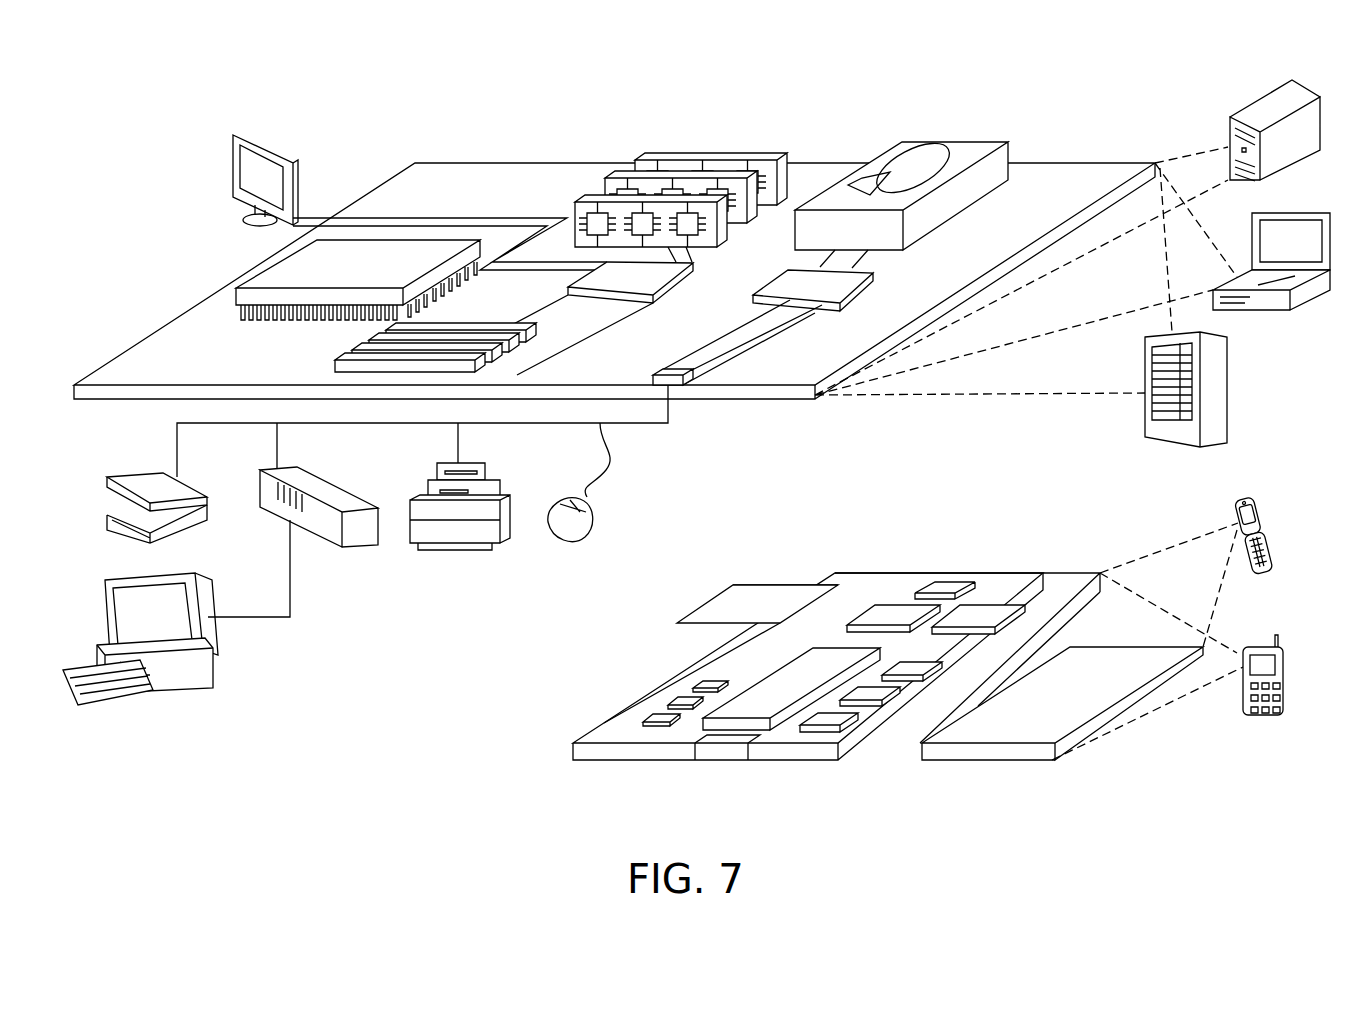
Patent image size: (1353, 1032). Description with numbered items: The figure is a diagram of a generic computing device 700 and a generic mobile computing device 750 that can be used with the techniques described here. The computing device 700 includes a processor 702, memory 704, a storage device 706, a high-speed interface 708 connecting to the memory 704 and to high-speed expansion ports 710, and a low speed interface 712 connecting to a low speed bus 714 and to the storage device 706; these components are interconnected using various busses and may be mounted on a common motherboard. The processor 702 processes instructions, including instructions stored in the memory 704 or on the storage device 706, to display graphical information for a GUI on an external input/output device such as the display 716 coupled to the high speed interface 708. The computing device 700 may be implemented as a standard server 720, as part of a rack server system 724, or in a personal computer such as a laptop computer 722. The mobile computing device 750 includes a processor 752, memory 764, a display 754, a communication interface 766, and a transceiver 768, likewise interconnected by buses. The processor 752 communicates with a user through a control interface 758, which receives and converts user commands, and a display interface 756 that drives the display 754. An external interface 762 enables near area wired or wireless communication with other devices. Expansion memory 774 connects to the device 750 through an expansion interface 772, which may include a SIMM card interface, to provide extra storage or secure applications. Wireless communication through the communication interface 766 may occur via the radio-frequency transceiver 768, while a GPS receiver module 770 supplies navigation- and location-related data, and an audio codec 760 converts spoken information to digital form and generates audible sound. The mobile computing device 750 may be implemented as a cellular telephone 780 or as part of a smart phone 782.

The computing device 700 is at (371, 117).
The processor 702 is at (262, 270).
The memory 704 is at (708, 158).
The storage device 706 is at (947, 138).
The high-speed interface 708 is at (645, 272).
The high-speed expansion ports 710 is at (358, 350).
The low speed interface 712 is at (792, 282).
The low speed bus 714 is at (675, 370).
The display 716 is at (233, 134).
The standard server 720 is at (1253, 112).
The laptop computer 722 is at (1306, 212).
The rack server system 724 is at (1225, 388).
The mobile computing device 750 is at (530, 765).
The processor 752 is at (762, 695).
The display 754 is at (1102, 660).
The display interface 756 is at (838, 715).
The control interface 758 is at (895, 690).
The audio codec 760 is at (930, 663).
The external interface 762 is at (720, 746).
The memory 764 is at (680, 700).
The communication interface 766 is at (897, 605).
The transceiver 768 is at (990, 605).
The GPS receiver module 770 is at (948, 584).
The expansion interface 772 is at (817, 584).
The expansion memory 774 is at (733, 584).
The cellular telephone 780 is at (1247, 497).
The smart phone 782 is at (1260, 645).